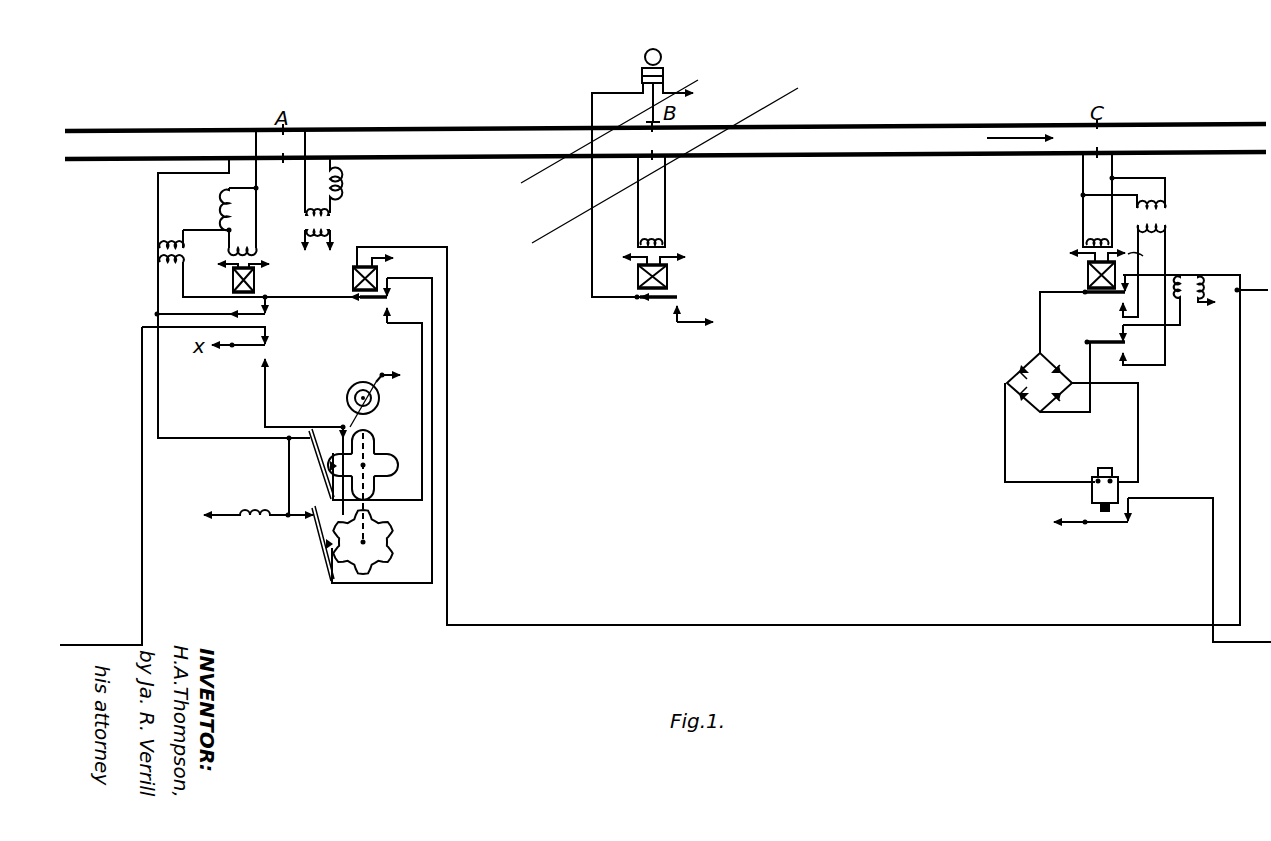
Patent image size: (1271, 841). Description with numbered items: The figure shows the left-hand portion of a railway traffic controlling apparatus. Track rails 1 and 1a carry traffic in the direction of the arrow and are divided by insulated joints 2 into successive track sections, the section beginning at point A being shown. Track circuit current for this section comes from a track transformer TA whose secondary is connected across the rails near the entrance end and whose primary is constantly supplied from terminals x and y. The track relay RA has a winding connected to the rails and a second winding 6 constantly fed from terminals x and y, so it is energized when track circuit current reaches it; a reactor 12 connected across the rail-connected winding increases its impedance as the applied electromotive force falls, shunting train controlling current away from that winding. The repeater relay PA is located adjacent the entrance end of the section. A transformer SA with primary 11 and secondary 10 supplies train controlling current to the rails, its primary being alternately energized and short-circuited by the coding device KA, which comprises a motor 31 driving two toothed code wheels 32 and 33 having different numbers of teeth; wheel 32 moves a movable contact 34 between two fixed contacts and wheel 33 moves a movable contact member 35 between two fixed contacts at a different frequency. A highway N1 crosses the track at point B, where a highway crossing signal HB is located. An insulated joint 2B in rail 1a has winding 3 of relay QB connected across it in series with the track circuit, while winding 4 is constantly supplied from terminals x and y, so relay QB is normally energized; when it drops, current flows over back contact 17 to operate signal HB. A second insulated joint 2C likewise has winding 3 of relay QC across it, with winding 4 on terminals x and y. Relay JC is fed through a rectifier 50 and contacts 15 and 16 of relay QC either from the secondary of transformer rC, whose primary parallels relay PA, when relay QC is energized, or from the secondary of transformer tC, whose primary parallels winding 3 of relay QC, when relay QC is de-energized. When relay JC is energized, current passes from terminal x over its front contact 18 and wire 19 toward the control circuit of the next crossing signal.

The track rail 1 is at (883, 127).
The track rail 1a is at (873, 153).
The insulated joints 2 is at (283, 157).
The insulated joint 2B is at (652, 157).
The insulated joint 2C is at (1097, 155).
The winding of relay Q 3 is at (875, 200).
The second winding of relay Q 4 is at (879, 268).
The winding of track relay 6 is at (236, 273).
The secondary of transformer S 10 is at (172, 246).
The primary of transformer S 11 is at (173, 275).
The reactor 12 is at (227, 206).
The contact of relay QC 15 is at (1096, 293).
The contact of relay QC 16 is at (1101, 331).
The back contact of relay QB 17 is at (656, 299).
The front contact of relay JC 18 is at (1103, 523).
The wire 19 is at (1178, 499).
The motor 31 is at (379, 401).
The code wheel 32 is at (376, 449).
The code wheel 33 is at (378, 560).
The movable contact 34 is at (339, 438).
The movable contact member 35 is at (336, 514).
The rectifier 50 is at (1025, 372).
The transformer S SA is at (184, 254).
The track transformer TA is at (331, 224).
The track relay RA is at (233, 283).
The repeater relay PA is at (353, 282).
The coding device KA is at (374, 388).
The highway crossing signal HB is at (642, 76).
The highway N1 is at (659, 161).
The relay QB is at (667, 279).
The relay QC is at (1097, 264).
The transformer tC is at (1141, 271).
The transformer rC is at (1191, 278).
The relay JC is at (1092, 498).